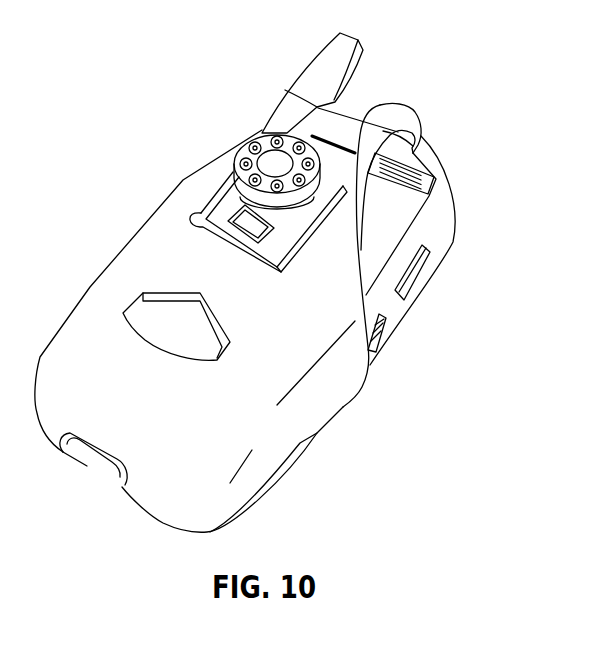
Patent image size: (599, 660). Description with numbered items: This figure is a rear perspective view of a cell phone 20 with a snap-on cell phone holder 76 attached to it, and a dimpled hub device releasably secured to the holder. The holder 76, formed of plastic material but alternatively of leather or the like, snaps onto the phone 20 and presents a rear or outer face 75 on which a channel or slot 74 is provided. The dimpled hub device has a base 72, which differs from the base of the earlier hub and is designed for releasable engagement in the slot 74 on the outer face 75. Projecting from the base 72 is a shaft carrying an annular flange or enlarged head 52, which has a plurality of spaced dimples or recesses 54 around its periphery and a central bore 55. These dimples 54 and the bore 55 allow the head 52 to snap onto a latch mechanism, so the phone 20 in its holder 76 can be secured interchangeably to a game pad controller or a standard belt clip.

The cell phone 20 is at (456, 207).
The annular flange or enlarged head 52 is at (326, 103).
The dimples or recesses 54 is at (250, 143).
The central bore 55 is at (185, 181).
The base 72 is at (257, 249).
The channel or slot 74 is at (192, 210).
The rear or outer face 75 is at (340, 313).
The snap-on cell phone holder 76 is at (338, 387).